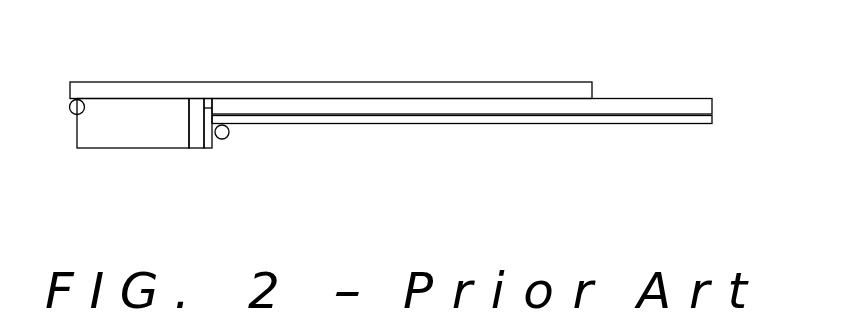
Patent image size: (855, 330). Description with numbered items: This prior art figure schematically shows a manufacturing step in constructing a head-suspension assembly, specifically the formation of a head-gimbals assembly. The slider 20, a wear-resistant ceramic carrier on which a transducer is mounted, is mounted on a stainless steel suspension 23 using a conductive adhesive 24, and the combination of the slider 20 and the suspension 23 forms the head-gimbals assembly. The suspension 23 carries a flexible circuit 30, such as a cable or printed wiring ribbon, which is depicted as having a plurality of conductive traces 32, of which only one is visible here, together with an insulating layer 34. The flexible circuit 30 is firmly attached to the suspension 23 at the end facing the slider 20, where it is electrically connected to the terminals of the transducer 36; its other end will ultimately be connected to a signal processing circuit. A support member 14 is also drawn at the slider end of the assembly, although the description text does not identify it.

The support member 14 is at (213, 147).
The slider 20 is at (117, 139).
The stainless steel suspension 23 is at (224, 84).
The conductive adhesive 24 is at (72, 96).
The flexible circuit 30 is at (726, 97).
The conductive trace 32 is at (420, 130).
The insulating layer 34 is at (638, 101).
The terminals of the transducer 36 is at (234, 137).